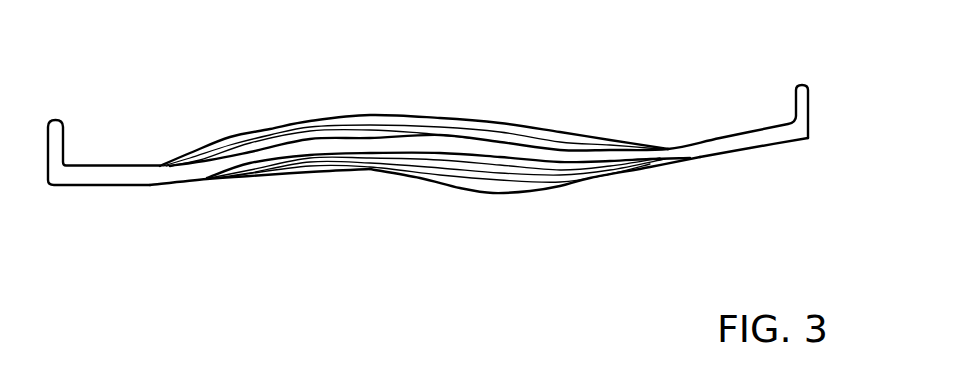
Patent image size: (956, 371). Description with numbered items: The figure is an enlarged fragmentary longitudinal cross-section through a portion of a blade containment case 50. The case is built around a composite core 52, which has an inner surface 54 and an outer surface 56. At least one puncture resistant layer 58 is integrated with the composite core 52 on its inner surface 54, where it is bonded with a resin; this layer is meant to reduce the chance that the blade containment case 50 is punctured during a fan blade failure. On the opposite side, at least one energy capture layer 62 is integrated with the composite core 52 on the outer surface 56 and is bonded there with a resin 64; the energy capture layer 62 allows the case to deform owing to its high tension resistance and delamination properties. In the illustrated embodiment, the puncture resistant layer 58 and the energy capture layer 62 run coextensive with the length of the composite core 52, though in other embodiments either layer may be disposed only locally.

The blade containment case 50 is at (457, 140).
The composite core 52 is at (668, 150).
The inner surface 54 is at (702, 155).
The outer surface 56 is at (587, 150).
The puncture resistant layer 58 is at (567, 177).
The energy capture layer 62 is at (470, 137).
The resin 64 is at (373, 130).